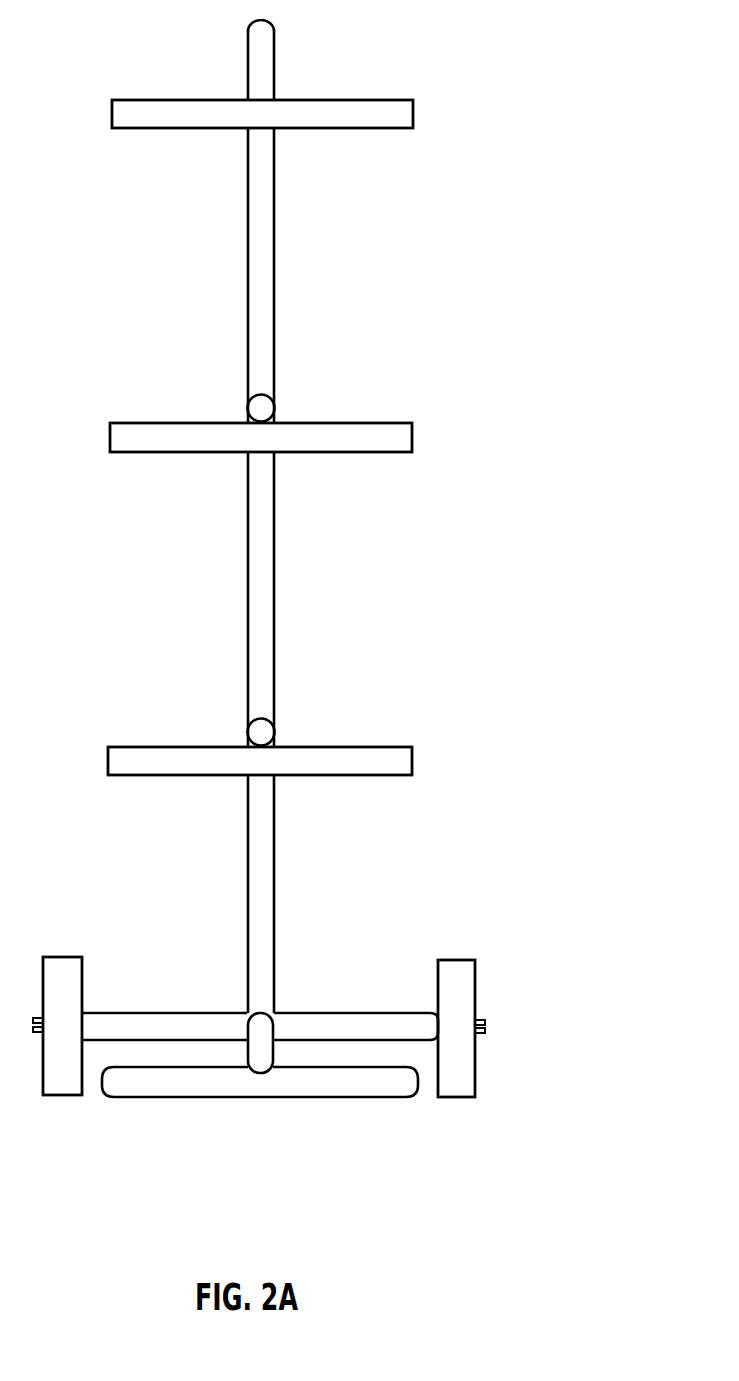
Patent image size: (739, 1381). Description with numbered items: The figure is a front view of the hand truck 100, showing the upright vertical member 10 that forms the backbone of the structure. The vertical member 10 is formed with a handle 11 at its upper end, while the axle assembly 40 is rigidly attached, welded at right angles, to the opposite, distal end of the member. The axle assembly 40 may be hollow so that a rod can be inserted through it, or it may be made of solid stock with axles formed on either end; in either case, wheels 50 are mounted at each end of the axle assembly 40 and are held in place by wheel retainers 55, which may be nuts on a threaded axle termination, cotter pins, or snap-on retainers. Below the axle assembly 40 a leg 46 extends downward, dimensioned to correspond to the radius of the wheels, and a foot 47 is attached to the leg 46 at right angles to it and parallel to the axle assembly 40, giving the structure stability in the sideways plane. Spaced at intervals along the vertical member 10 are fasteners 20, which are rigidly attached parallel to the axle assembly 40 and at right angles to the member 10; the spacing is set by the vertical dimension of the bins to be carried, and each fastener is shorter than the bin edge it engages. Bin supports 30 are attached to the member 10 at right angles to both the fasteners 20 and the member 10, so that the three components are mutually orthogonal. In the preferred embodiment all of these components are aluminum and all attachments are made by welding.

The vertical member 10 is at (277, 252).
The handle 11 is at (278, 39).
The fastener 20 is at (414, 115).
The bin support 30 is at (279, 405).
The axle assembly 40 is at (313, 1009).
The leg 46 is at (244, 1059).
The foot 47 is at (340, 1100).
The wheel 50 is at (462, 960).
The wheel retainer 55 is at (496, 1021).
The hand truck 100 is at (654, 122).